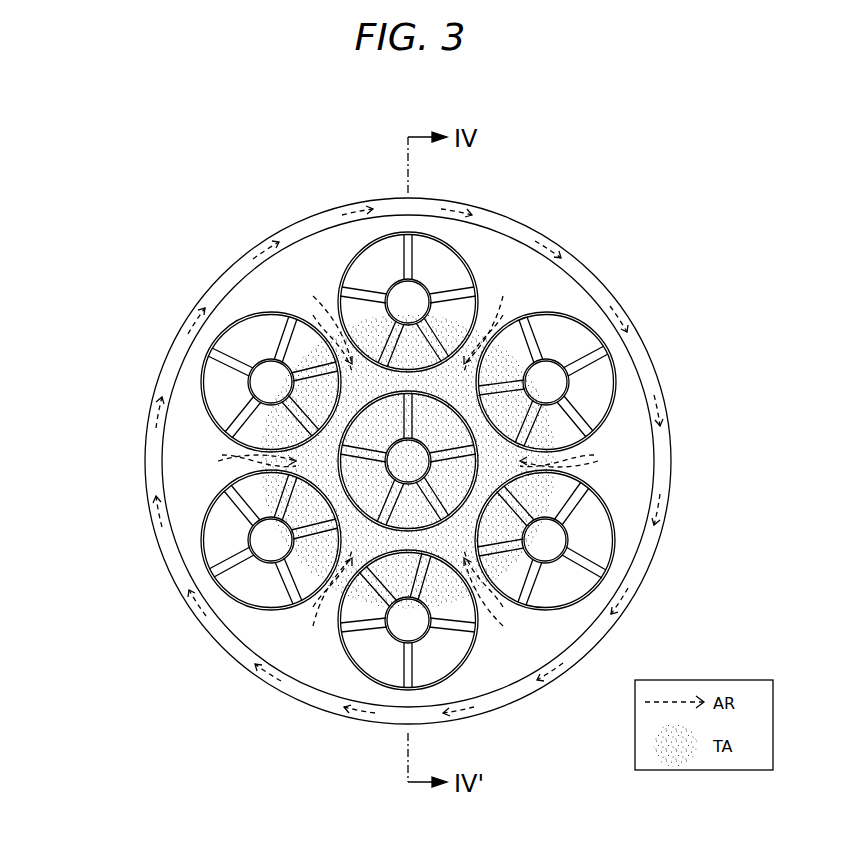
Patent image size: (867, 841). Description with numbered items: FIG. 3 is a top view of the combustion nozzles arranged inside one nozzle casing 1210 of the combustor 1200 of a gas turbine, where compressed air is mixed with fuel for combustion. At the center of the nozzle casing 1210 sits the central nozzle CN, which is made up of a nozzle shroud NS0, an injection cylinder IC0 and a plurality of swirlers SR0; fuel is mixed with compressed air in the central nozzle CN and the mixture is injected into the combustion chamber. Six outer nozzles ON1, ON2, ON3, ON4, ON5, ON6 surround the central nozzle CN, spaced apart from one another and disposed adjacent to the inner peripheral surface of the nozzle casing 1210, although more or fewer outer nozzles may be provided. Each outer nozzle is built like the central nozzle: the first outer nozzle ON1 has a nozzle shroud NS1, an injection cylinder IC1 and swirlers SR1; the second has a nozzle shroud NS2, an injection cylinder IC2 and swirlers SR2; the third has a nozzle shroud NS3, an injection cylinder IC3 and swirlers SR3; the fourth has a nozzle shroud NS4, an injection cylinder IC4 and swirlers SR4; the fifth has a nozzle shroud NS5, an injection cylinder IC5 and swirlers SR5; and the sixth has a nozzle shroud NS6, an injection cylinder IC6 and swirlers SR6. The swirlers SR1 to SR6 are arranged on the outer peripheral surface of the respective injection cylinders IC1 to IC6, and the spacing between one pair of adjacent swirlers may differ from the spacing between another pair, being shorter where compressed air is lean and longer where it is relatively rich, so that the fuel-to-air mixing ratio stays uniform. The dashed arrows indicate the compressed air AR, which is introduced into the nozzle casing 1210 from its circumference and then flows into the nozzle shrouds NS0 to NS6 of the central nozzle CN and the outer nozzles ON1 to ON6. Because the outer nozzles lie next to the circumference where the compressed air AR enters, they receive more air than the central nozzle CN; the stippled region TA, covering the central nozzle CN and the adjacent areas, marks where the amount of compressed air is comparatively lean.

The combustor 1200 is at (205, 89).
The nozzle casing 1210 is at (495, 218).
The central nozzle CN is at (735, 368).
The swirlers SR0 is at (476, 455).
The injection cylinder IC0 is at (424, 444).
The nozzle shroud NS0 is at (470, 478).
The outer nozzle ON1 is at (395, 148).
The swirlers SR1 is at (341, 287).
The injection cylinder IC1 is at (387, 282).
The nozzle shroud NS1 is at (402, 236).
The outer nozzle ON2 is at (118, 320).
The swirlers SR2 is at (208, 411).
The injection cylinder IC2 is at (249, 390).
The nozzle shroud NS2 is at (205, 364).
The outer nozzle ON3 is at (200, 736).
The swirlers SR3 is at (287, 610).
The injection cylinder IC3 is at (262, 562).
The nozzle shroud NS3 is at (222, 590).
The outer nozzle ON4 is at (590, 710).
The swirlers SR4 is at (478, 620).
The injection cylinder IC4 is at (430, 630).
The nozzle shroud NS4 is at (450, 677).
The outer nozzle ON5 is at (752, 503).
The swirlers SR5 is at (594, 492).
The injection cylinder IC5 is at (562, 527).
The nozzle shroud NS5 is at (612, 560).
The outer nozzle ON6 is at (672, 290).
The swirlers SR6 is at (569, 312).
The injection cylinder IC6 is at (561, 362).
The nozzle shroud NS6 is at (578, 333).
The compressed air AR is at (408, 461).
The region TA is at (408, 461).